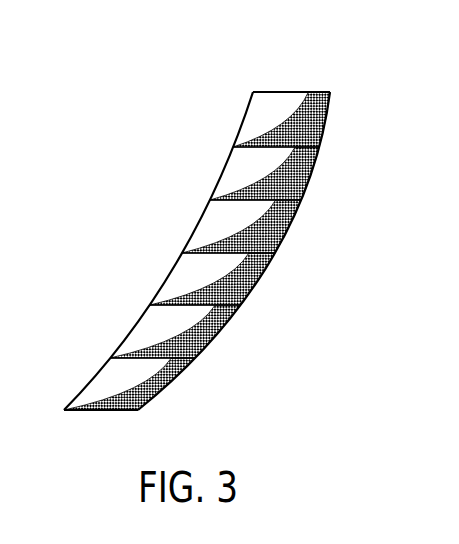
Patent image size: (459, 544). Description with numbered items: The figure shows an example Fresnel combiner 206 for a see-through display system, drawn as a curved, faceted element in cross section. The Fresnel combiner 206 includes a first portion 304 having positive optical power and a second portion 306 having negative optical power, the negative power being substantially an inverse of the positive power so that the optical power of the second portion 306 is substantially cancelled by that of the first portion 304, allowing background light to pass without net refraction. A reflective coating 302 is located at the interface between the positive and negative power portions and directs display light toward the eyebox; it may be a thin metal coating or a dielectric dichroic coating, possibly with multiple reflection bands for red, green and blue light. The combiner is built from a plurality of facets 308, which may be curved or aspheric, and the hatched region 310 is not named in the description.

The Fresnel combiner 206 is at (291, 92).
The reflective coating 302 is at (159, 323).
The first portion 304 is at (152, 270).
The second portion 306 is at (270, 289).
The facets 308 is at (212, 222).
The hatched coated region 310 is at (276, 121).